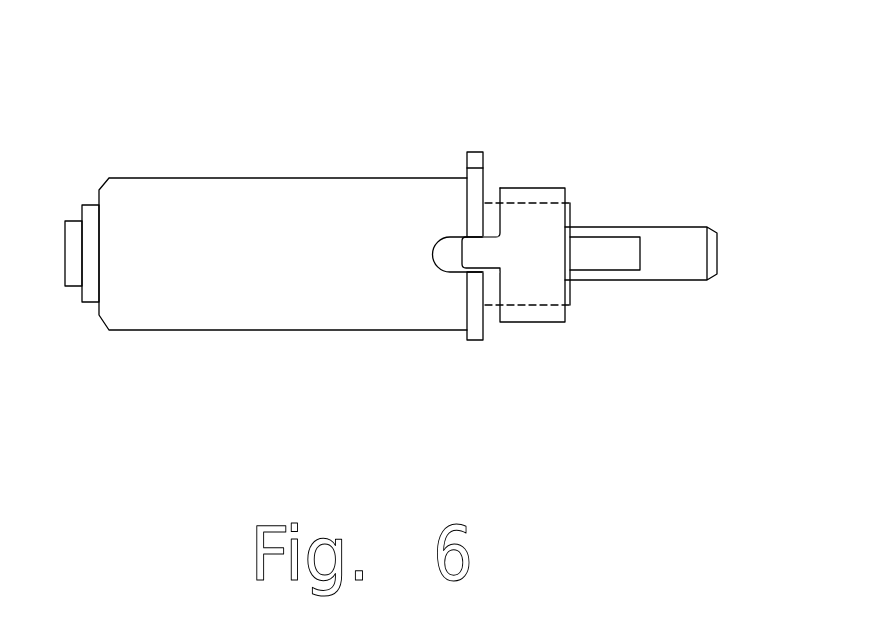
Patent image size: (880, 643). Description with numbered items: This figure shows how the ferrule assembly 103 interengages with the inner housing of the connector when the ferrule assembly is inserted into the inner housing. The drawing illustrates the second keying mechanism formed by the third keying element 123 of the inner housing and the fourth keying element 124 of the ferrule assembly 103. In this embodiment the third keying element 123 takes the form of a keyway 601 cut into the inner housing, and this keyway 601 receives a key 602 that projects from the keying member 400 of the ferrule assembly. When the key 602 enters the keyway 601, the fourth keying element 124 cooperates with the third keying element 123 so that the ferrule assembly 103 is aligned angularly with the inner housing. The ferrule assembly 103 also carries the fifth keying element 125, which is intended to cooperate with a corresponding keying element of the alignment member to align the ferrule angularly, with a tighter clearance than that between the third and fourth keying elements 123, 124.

The fifth keying element 125 is at (255, 217).
The keying member 400 is at (547, 195).
The ferrule assembly 103 is at (492, 213).
The third keying element 123 is at (394, 155).
The keyway 601 is at (452, 253).
The fourth keying element 124 is at (513, 346).
The key 602 is at (493, 255).